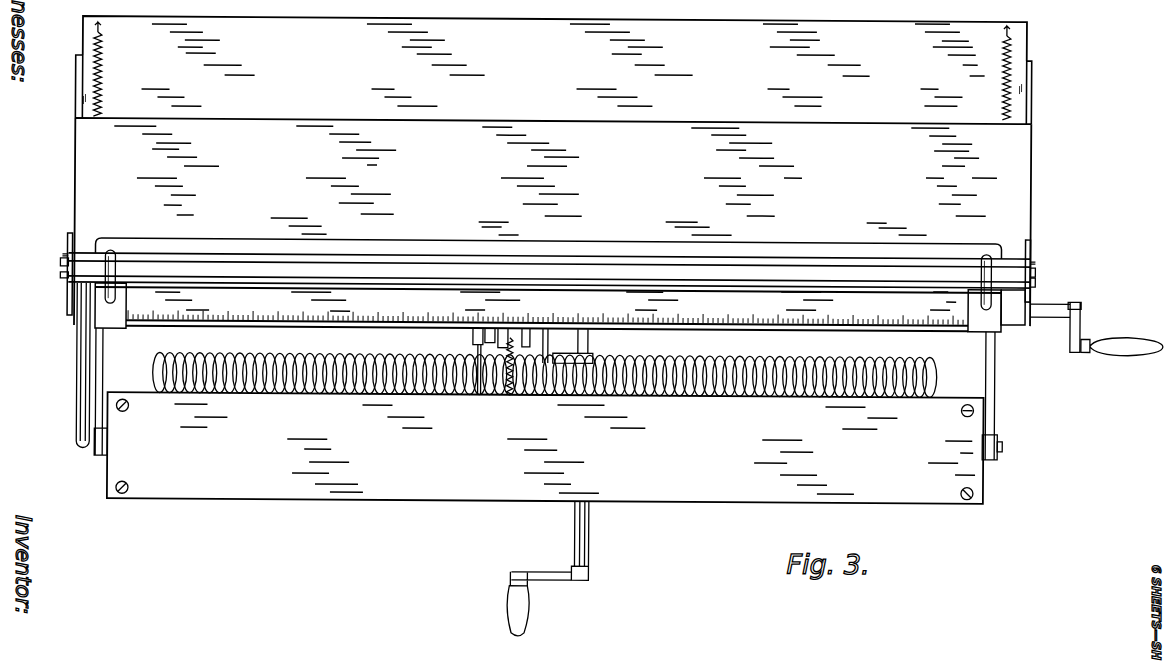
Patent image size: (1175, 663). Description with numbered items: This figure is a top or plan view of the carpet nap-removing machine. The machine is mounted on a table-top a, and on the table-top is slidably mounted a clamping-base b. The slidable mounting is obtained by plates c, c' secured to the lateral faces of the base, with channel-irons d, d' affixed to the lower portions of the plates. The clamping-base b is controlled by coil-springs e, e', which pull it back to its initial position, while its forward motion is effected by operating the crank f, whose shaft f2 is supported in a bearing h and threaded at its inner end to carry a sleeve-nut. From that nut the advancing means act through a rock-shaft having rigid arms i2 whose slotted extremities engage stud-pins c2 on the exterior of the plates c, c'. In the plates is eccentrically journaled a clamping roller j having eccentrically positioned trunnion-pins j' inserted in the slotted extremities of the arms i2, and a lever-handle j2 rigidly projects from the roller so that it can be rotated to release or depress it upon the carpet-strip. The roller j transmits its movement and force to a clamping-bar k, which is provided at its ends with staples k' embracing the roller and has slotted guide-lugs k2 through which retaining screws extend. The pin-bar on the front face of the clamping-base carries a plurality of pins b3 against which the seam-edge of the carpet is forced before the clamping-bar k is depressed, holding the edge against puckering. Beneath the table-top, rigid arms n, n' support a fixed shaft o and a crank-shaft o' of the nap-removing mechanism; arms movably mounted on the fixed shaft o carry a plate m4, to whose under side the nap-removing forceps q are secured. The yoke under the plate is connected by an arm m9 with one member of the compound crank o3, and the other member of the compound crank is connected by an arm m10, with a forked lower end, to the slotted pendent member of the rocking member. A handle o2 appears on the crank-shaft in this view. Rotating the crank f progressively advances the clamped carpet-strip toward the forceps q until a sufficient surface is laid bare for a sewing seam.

The table-top a is at (555, 52).
The clamping-base b is at (552, 224).
The channel-iron d is at (1037, 92).
The channel-iron d' is at (57, 86).
The coil-spring e is at (979, 73).
The coil-spring e' is at (119, 69).
The clamping-bar k is at (548, 253).
The staple k' is at (562, 254).
The slotted guide-lug k2 is at (985, 330).
The clamping roller j is at (549, 243).
The trunnion-pin j' is at (541, 286).
The lever-handle j2 is at (79, 384).
The plate c is at (1046, 273).
The plate c' is at (45, 279).
The stud-pin c2 is at (1037, 268).
The rigid arm i2 is at (1036, 258).
The pin b3 is at (252, 313).
The compound crank o3 is at (532, 322).
The arm m10 is at (476, 338).
The arm m9 is at (506, 334).
The bearing h is at (580, 348).
The nap-removing forceps q is at (545, 364).
The plate m4 is at (545, 448).
The rigid arm n is at (1010, 396).
The rigid arm n' is at (72, 401).
The fixed shaft o is at (1010, 451).
The crank-shaft o' is at (1055, 329).
The crank handle o2 is at (1122, 337).
The crank f is at (539, 590).
The shaft f2 is at (593, 530).